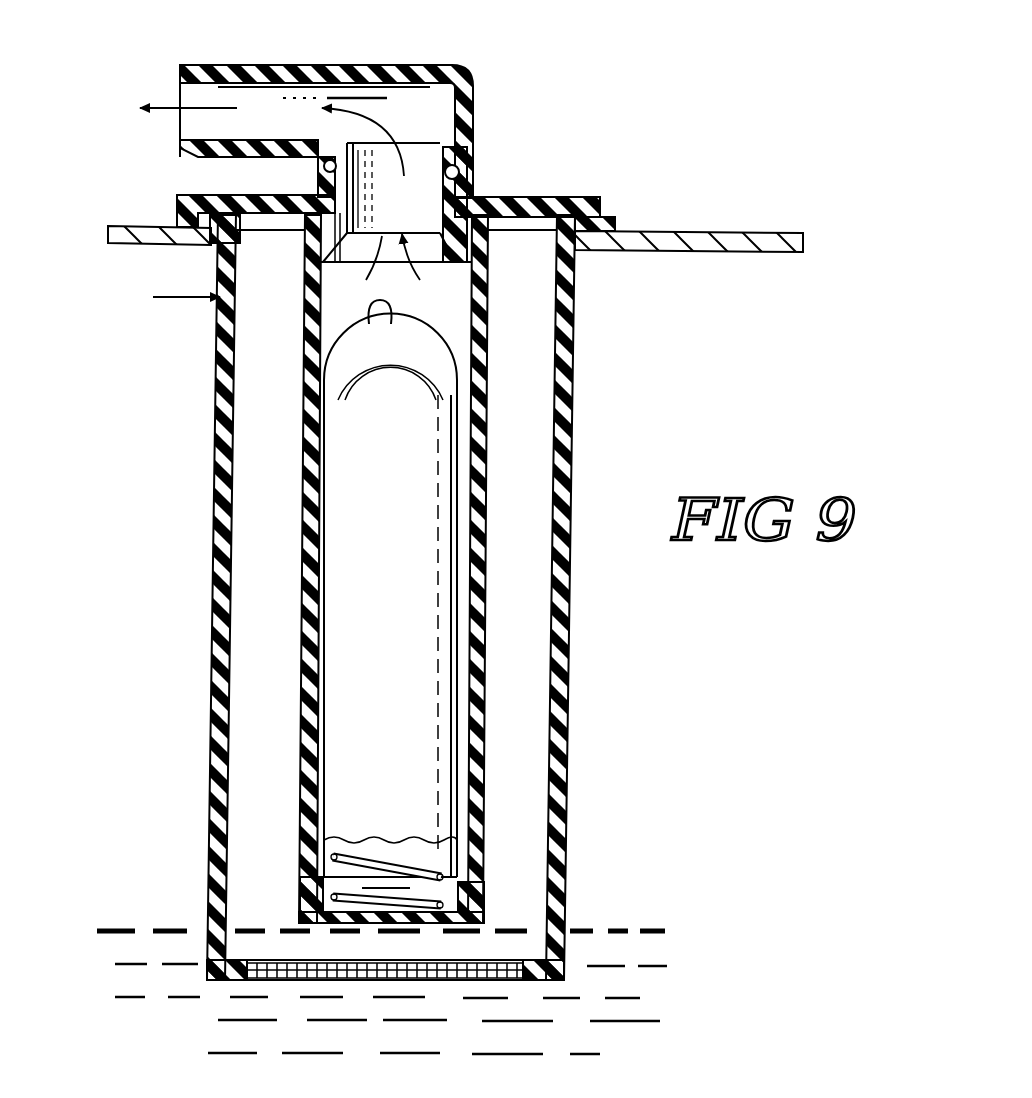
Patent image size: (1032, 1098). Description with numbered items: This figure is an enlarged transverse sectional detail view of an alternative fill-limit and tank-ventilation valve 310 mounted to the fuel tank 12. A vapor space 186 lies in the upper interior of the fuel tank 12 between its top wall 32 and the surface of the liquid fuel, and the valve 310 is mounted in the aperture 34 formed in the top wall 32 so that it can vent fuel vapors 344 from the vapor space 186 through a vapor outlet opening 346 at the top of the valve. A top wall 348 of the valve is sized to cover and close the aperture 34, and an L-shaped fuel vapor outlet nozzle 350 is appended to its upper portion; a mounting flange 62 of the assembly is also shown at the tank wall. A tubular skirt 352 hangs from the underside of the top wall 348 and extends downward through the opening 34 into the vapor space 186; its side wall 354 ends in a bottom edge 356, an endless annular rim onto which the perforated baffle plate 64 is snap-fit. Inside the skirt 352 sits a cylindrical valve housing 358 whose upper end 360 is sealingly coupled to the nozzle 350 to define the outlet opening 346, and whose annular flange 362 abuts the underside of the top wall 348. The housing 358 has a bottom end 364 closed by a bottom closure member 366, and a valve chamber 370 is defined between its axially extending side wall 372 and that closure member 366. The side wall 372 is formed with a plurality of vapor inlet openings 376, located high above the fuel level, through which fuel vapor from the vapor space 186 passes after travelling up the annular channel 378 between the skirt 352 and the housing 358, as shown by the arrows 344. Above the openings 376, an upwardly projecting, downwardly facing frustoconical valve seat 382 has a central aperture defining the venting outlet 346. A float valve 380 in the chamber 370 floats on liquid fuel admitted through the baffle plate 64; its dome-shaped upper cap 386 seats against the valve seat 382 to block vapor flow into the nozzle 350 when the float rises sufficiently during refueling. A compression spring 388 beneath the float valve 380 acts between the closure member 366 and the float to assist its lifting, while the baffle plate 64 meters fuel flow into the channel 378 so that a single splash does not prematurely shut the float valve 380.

The fuel tank 12 is at (790, 304).
The top wall 32 is at (735, 203).
The aperture 34 is at (577, 268).
The mounting flange 62 is at (560, 205).
The perforated baffle plate 64 is at (226, 984).
The vapor space 186 is at (100, 288).
The fill-limit and tank-ventilation valve 310 is at (784, 398).
The fuel vapors 344 is at (168, 113).
The vapor outlet opening 346 is at (450, 136).
The top wall 348 is at (548, 192).
The L-shaped fuel vapor outlet nozzle 350 is at (384, 54).
The tubular skirt 352 is at (215, 364).
The side wall 354 is at (573, 409).
The bottom edge 356 is at (553, 983).
The valve housing 358 is at (300, 548).
The upper end 360 is at (459, 178).
The annular flange 362 is at (218, 267).
The bottom end 364 is at (299, 878).
The bottom closure member 366 is at (318, 936).
The valve chamber 370 is at (447, 318).
The side wall 372 is at (484, 587).
The vapor inlet openings 376 is at (318, 277).
The annular channel 378 is at (258, 342).
The float valve 380 is at (410, 485).
The frustoconical valve seat 382 is at (477, 273).
The dome-shaped upper cap 386 is at (384, 312).
The compression spring 388 is at (398, 862).